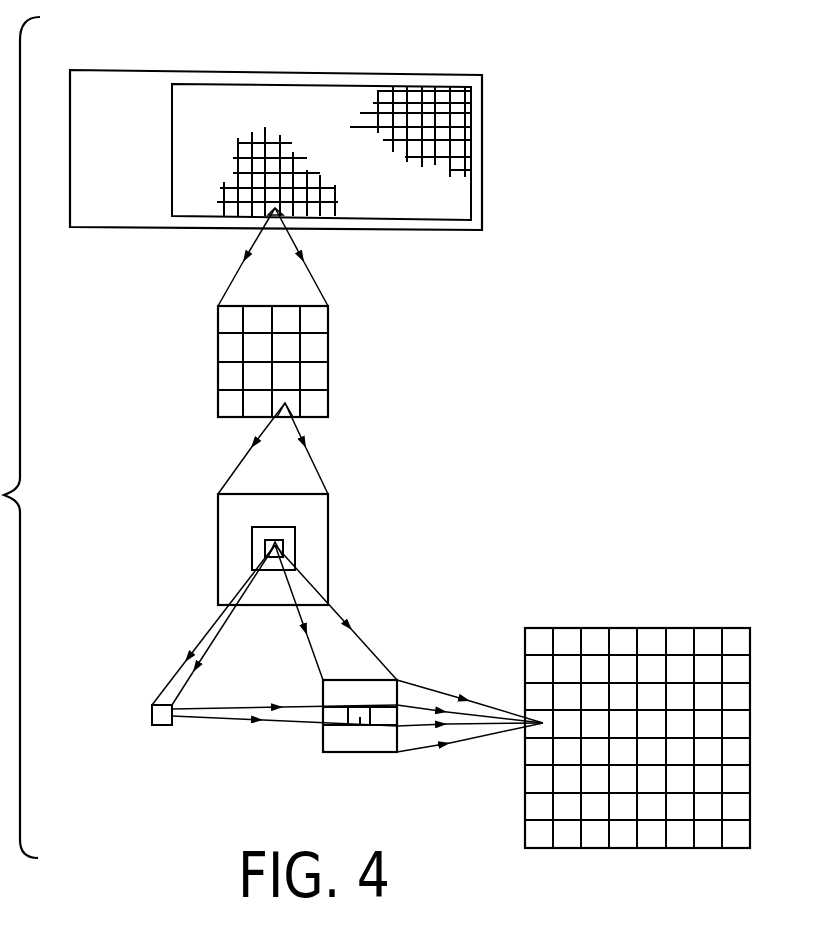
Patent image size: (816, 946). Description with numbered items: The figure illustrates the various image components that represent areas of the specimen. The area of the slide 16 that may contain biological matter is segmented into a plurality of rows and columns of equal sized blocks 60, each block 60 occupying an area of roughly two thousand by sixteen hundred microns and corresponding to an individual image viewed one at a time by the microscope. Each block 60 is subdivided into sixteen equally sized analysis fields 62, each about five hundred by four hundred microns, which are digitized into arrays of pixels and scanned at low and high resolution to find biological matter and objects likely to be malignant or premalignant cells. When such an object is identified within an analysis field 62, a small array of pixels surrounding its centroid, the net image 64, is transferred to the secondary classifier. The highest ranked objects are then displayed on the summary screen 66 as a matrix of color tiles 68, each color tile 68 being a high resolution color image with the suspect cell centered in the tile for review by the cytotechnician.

The slide 16 is at (148, 90).
The block 60 is at (470, 108).
The analysis field 62 is at (228, 348).
The net image 64 is at (268, 544).
The summary screen 66 is at (571, 858).
The color tile 68 is at (292, 551).